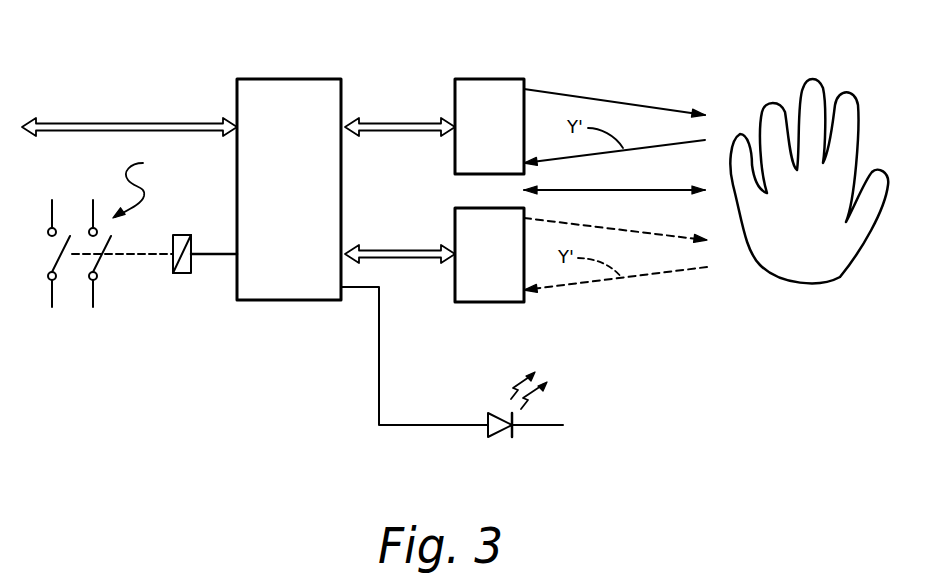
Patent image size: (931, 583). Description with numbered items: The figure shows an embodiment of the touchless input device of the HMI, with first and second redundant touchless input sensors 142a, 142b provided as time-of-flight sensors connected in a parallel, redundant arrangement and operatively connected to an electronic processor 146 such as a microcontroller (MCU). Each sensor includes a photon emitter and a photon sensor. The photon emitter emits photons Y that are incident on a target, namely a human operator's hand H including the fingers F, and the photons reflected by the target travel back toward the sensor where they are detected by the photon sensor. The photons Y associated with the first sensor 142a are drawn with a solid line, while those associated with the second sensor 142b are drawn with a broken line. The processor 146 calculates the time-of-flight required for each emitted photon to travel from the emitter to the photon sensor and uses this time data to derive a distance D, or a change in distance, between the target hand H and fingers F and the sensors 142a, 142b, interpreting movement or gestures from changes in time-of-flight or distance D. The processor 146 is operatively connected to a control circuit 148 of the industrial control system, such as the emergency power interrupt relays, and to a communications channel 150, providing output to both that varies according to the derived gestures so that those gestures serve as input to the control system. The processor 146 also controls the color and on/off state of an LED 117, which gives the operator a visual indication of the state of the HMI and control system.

The communications channel 150 is at (182, 127).
The electronic processor 146 is at (302, 79).
The first touchless input sensor 142a is at (497, 79).
The second touchless input sensor 142b is at (488, 302).
The control circuit 148 is at (165, 295).
The LED 117 is at (486, 408).
The photons Y is at (627, 100).
The distance D is at (643, 190).
The hand H is at (797, 240).
The fingers F is at (770, 108).